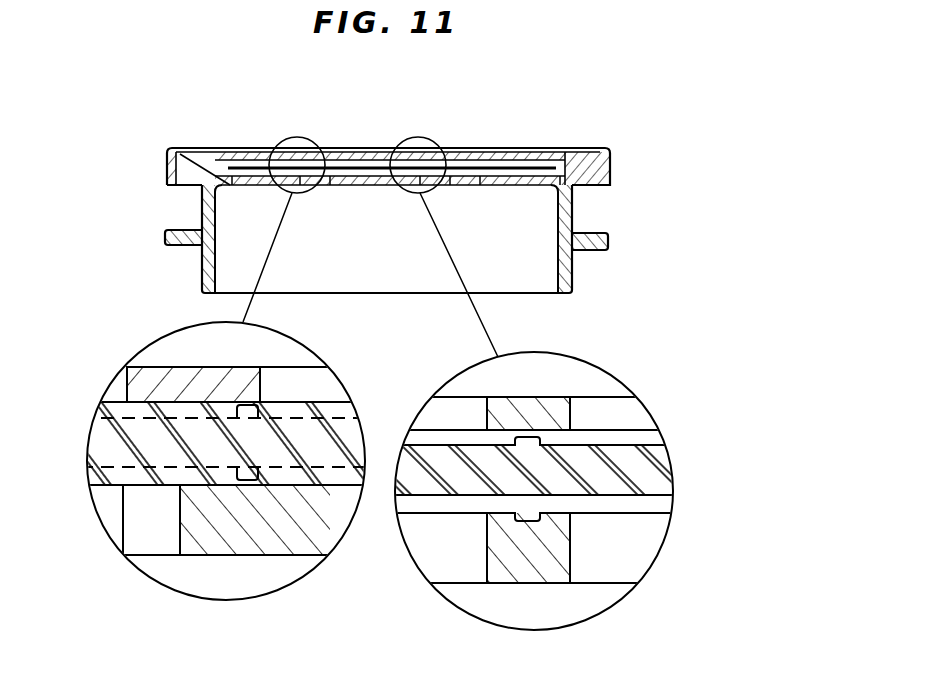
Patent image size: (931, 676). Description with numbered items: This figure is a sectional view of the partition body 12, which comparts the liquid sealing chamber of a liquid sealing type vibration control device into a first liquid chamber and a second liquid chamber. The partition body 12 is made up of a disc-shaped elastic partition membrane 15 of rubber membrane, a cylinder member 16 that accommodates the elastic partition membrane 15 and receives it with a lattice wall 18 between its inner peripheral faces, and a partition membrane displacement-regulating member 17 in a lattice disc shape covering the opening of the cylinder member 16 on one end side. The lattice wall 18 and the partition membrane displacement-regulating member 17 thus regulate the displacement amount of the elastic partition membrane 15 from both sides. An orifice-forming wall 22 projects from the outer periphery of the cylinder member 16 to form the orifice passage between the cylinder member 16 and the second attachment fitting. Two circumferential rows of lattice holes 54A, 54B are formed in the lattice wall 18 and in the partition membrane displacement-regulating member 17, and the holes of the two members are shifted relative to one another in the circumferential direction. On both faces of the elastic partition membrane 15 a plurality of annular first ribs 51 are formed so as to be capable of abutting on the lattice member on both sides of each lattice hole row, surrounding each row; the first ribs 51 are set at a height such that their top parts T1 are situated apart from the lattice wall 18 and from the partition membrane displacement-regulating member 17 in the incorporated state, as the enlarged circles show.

The partition body 12 is at (643, 144).
The elastic partition membrane 15 is at (293, 460).
The cylinder member 16 is at (570, 288).
The partition membrane displacement-regulating member 17 is at (158, 144).
The lattice wall 18 is at (480, 187).
The orifice-forming wall 22 is at (590, 233).
The first ribs 51 is at (237, 404).
The lattice holes 54A is at (437, 127).
The lattice holes 54B is at (520, 148).
The top parts T1 is at (260, 392).